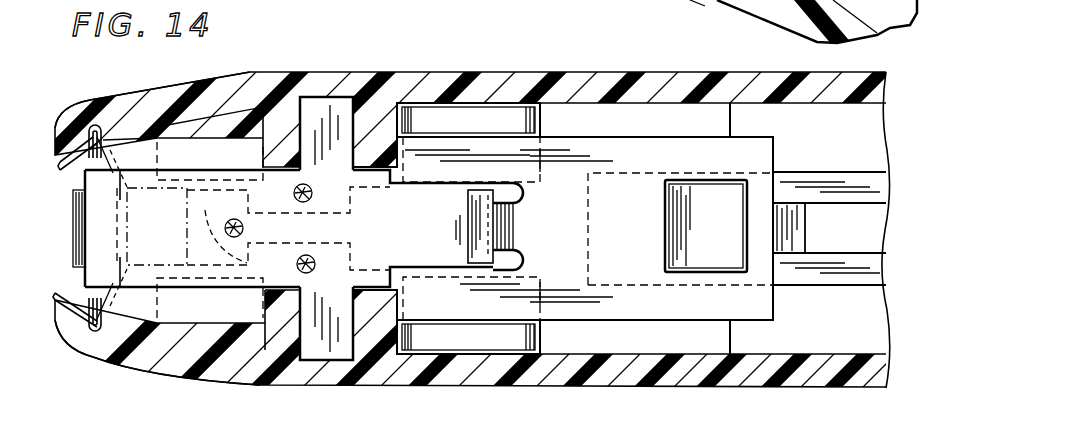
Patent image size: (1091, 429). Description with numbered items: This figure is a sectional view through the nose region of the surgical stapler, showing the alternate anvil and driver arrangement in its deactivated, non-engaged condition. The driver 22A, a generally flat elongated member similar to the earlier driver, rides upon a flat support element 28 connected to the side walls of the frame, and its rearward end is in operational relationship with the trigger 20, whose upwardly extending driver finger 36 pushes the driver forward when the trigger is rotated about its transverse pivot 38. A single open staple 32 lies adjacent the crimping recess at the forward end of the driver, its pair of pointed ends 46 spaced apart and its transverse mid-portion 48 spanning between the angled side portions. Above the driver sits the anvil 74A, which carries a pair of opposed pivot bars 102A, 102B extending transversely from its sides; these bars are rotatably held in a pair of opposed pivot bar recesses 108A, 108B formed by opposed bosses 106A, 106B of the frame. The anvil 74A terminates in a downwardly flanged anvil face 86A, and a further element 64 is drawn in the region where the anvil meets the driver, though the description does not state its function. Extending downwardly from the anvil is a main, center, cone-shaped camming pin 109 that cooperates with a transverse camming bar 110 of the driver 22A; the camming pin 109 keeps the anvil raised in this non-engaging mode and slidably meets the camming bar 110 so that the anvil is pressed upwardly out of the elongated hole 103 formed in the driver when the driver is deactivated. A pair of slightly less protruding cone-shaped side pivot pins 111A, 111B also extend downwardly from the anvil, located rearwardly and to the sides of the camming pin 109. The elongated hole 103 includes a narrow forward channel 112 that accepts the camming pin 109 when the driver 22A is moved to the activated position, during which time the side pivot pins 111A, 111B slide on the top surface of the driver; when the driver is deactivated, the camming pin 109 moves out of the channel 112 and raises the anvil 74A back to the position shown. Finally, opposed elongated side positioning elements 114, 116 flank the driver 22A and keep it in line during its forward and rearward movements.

The trigger element 20 is at (718, 2).
The driver 22A is at (667, 148).
The flat support element 28 is at (190, 312).
The staple 32 is at (74, 174).
The driver finger 36 is at (683, 240).
The pivot 38 is at (644, 11).
The pointed ends 46 is at (74, 165).
The transverse mid-portion 48 is at (131, 228).
The spring contact end 64 is at (512, 230).
The anvil 74A is at (470, 195).
The anvil face 86A is at (76, 230).
The pivot bar 102A is at (332, 105).
The pivot bar 102B is at (335, 355).
The elongated hole 103 is at (432, 240).
The boss 106A is at (378, 120).
The boss 106B is at (374, 340).
The pivot bar recess 108A is at (285, 70).
The pivot bar recess 108B is at (285, 385).
The camming pin 109 is at (234, 219).
The camming bar 110 is at (242, 244).
The side pivot pin 111A is at (295, 193).
The side pivot pin 111B is at (310, 273).
The channel 112 is at (327, 236).
The side positioning element 114 is at (505, 115).
The side positioning element 116 is at (500, 345).